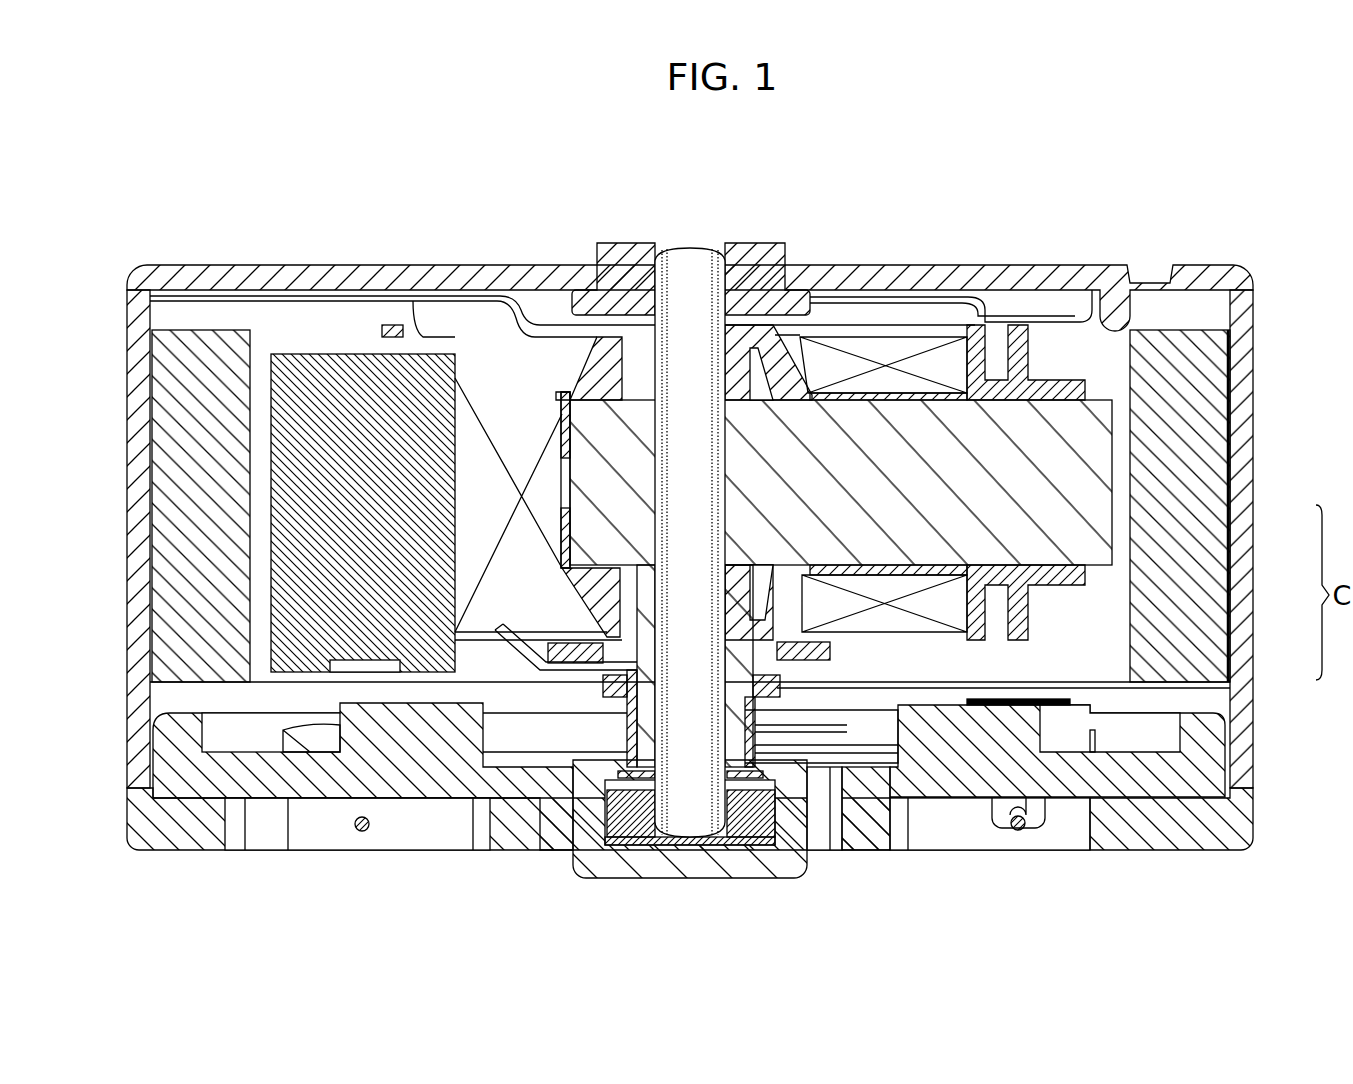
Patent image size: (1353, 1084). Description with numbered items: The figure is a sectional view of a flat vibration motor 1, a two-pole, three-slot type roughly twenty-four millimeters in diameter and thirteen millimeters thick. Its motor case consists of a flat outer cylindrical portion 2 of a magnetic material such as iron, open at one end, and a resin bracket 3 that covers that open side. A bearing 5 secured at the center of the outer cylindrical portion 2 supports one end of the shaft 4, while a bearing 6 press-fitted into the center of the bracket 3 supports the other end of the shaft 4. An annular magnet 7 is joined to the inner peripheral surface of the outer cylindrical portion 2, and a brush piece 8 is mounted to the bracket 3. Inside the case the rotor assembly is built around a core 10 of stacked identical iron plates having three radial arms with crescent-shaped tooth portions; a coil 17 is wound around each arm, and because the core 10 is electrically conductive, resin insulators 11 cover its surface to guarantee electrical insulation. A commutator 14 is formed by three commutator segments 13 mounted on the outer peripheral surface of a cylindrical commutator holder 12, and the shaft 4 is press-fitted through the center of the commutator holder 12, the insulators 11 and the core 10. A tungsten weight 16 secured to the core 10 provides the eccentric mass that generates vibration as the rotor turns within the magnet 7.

The vibration motor 1 is at (945, 172).
The outer cylindrical portion 2 is at (1256, 526).
The bracket 3 is at (1258, 830).
The shaft 4 is at (693, 258).
The bearing 5 is at (762, 243).
The bearing 6 is at (760, 850).
The magnet 7 is at (148, 482).
The brush piece 8 is at (862, 738).
The core 10 is at (1095, 447).
The insulators 11 is at (1078, 372).
The commutator holder 12 is at (645, 846).
The commutator segments 13 is at (617, 702).
The commutator 14 is at (606, 748).
The weight 16 is at (305, 365).
The coil 17 is at (530, 355).